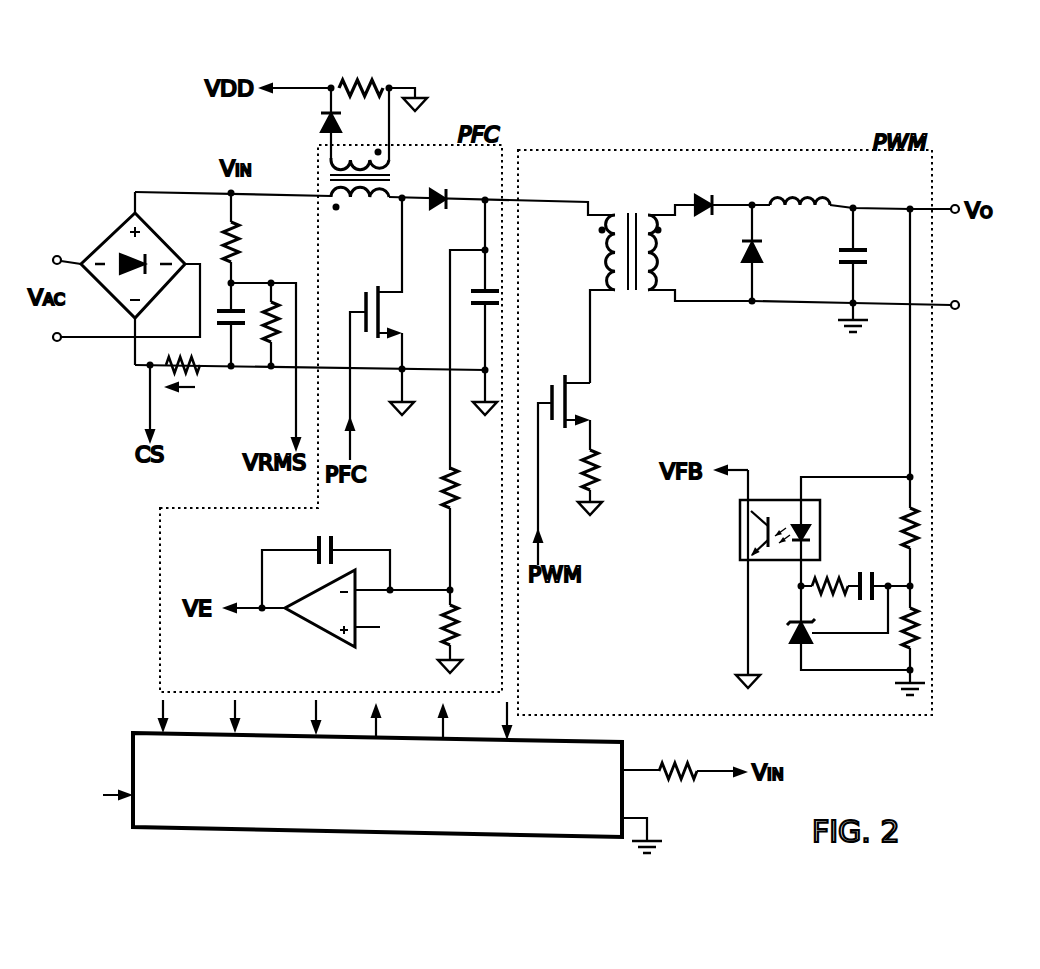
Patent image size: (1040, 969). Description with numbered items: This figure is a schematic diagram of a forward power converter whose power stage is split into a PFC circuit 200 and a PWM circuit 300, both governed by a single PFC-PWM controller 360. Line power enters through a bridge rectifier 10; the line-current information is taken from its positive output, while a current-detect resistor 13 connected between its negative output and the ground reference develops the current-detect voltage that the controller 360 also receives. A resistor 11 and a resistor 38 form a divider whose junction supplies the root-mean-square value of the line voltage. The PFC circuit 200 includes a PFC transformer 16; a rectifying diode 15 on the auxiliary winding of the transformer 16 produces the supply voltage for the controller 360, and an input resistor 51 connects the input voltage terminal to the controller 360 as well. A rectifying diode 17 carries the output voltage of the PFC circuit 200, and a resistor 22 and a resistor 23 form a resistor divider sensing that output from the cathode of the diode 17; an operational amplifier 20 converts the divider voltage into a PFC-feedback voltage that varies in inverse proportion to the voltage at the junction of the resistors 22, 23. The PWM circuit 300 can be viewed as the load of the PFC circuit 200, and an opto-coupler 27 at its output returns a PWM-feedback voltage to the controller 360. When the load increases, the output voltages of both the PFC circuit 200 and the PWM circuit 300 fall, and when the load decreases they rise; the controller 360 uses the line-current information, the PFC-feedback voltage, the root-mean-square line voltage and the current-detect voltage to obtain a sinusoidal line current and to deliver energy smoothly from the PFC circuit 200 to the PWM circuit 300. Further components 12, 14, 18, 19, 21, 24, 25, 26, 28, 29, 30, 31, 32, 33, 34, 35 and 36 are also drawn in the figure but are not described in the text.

The bridge rectifier 10 is at (108, 225).
The resistor 11 is at (243, 240).
The capacitor 12 is at (238, 335).
The current-detect resistor 13 is at (205, 380).
The resistor 14 is at (368, 82).
The rectifying diode 15 is at (316, 130).
The PFC transformer 16 is at (360, 205).
The rectifying diode 17 is at (432, 215).
The PFC switch transistor 18 is at (382, 348).
The capacitor 19 is at (337, 536).
The operational amplifier 20 is at (312, 635).
The bulk capacitor 21 is at (470, 305).
The resistor 22 is at (462, 498).
The resistor 23 is at (440, 648).
The PWM transformer 24 is at (630, 298).
The PWM switch transistor 25 is at (582, 401).
The resistor 26 is at (605, 472).
The opto-coupler 27 is at (740, 567).
The rectifier diode 28 is at (702, 190).
The diode 29 is at (738, 258).
The output inductor 30 is at (797, 212).
The output capacitor 31 is at (845, 264).
The resistor 32 is at (918, 525).
The resistor 33 is at (918, 628).
The capacitor 34 is at (866, 560).
The resistor 35 is at (830, 560).
The zener diode 36 is at (815, 648).
The resistor 38 is at (280, 348).
The input resistor 51 is at (698, 757).
The PFC circuit 200 is at (441, 145).
The PWM circuit 300 is at (832, 150).
The PFC-PWM controller 360 is at (628, 792).